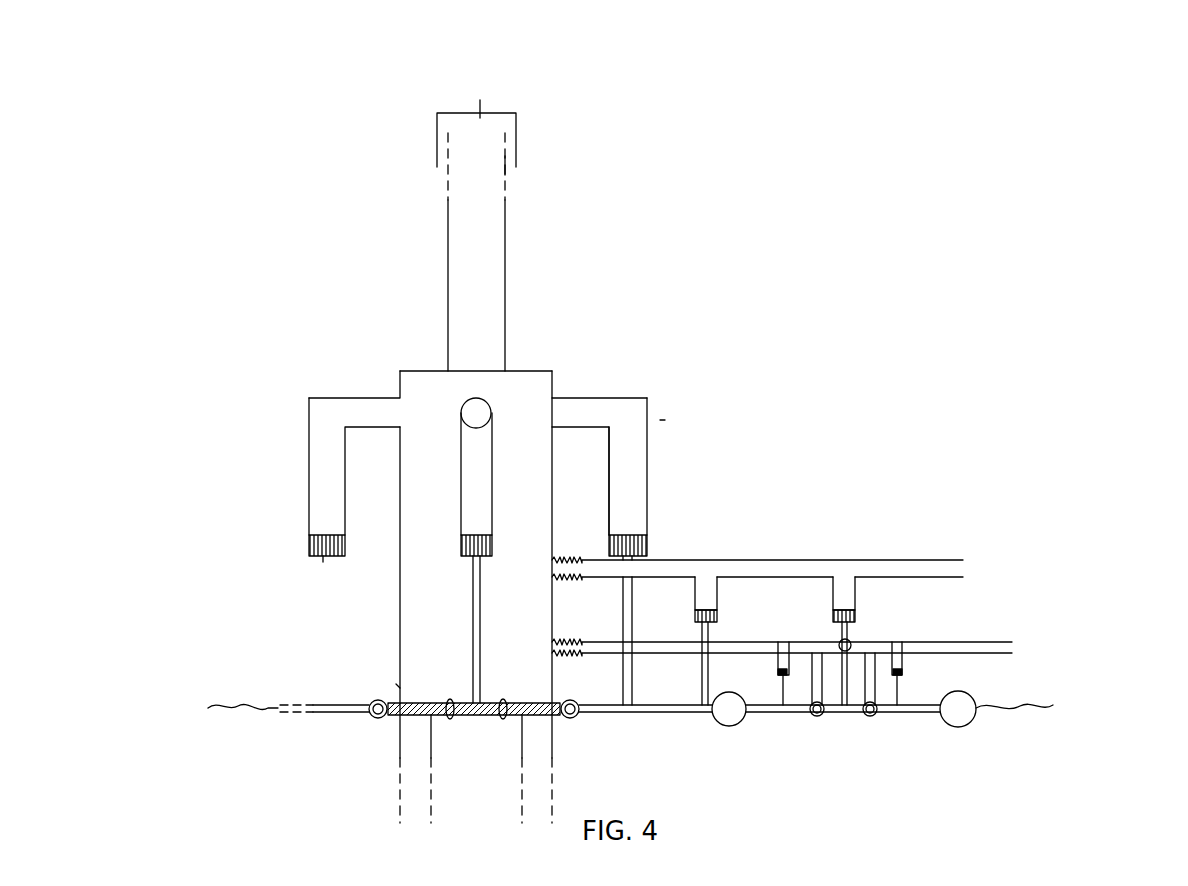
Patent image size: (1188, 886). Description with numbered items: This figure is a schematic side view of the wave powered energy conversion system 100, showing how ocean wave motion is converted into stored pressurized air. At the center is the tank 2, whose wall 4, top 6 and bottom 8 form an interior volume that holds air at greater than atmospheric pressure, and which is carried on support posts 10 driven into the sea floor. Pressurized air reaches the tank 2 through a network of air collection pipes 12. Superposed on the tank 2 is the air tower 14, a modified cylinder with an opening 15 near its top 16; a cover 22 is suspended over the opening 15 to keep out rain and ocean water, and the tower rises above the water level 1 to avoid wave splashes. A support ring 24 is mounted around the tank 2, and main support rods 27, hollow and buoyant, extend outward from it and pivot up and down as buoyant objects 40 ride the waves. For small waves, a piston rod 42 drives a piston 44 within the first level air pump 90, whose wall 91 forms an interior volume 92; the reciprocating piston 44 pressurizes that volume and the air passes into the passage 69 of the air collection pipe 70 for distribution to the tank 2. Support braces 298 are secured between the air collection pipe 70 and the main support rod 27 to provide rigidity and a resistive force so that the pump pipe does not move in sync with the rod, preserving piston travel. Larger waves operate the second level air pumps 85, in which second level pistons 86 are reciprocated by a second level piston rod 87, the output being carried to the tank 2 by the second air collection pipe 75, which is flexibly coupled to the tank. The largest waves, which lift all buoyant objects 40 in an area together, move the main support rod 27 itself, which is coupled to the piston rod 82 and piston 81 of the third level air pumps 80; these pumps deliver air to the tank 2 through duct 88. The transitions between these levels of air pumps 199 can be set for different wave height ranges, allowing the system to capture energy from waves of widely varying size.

The wave powered energy conversion system 100 is at (1023, 254).
The water level 1 is at (240, 710).
The tank 2 is at (552, 378).
The wall 4 is at (398, 570).
The top 6 is at (525, 371).
The bottom 8 is at (395, 675).
The support posts 10 is at (553, 773).
The air collection pipes 12 is at (812, 559).
The air tower 14 is at (505, 248).
The opening 15 is at (473, 112).
The top 16 is at (498, 163).
The cover 22 is at (452, 113).
The support ring 24 is at (572, 703).
The main support rods 27 is at (295, 712).
The buoyant objects 40 is at (723, 724).
The piston rod 42 is at (898, 692).
The piston 44 is at (903, 677).
The passage 69 is at (673, 560).
The air collection pipe 70 is at (1007, 648).
The second air collection pipe 75 is at (877, 559).
The third level air pumps 80 is at (309, 415).
The piston 81 is at (325, 556).
The piston rod 82 is at (473, 625).
The second level air pumps 85 is at (855, 587).
The second level pistons 86 is at (855, 610).
The second level piston rod 87 is at (701, 676).
The duct 88 is at (596, 405).
The first level air pump 90 is at (755, 654).
The wall 91 is at (790, 658).
The interior volume 92 is at (783, 652).
The levels of air pumps 199 is at (662, 420).
The support braces 298 is at (811, 688).